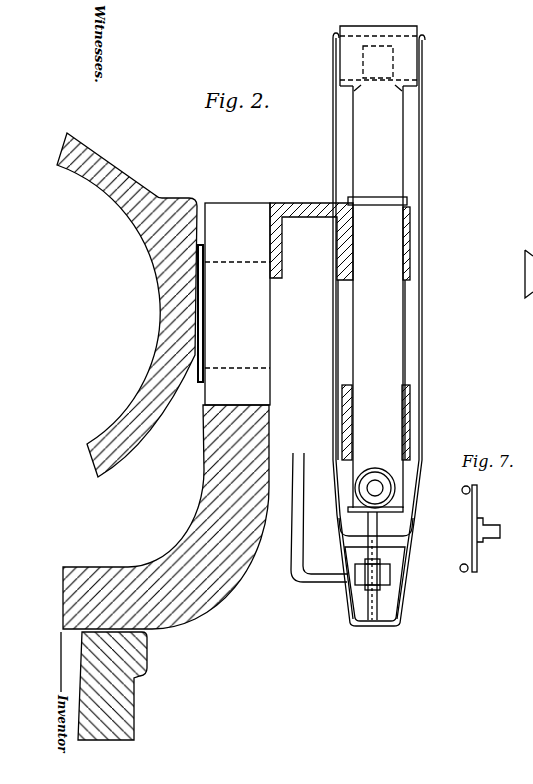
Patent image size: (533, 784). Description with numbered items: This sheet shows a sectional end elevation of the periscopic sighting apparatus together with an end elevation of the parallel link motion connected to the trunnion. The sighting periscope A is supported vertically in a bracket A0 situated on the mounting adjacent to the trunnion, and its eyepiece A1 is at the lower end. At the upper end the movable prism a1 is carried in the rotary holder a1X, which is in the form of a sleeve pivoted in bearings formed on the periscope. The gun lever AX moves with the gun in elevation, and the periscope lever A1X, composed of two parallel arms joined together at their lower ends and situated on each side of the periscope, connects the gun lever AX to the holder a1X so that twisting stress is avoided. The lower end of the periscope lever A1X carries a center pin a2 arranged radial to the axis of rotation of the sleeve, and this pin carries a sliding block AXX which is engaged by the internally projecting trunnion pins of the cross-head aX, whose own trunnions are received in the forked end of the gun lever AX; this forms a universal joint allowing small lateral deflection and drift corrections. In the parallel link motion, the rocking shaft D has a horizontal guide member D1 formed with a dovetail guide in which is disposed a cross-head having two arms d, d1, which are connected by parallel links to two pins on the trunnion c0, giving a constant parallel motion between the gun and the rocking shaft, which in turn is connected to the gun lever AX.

In FIG. 2, the sighting periscope A is at (377, 267).
In FIG. 2, the bracket A0 is at (350, 415).
In FIG. 2, the eyepiece A1 is at (377, 480).
In FIG. 2, the gun lever AX is at (310, 440).
In FIG. 2, the periscope lever A1X is at (340, 515).
In FIG. 2, the sliding block AXX is at (423, 550).
In FIG. 2, the prism a1 is at (378, 73).
In FIG. 2, the rotary holder a1X is at (402, 71).
In FIG. 2, the cross-head aX is at (367, 572).
In FIG. 2, the center pin a2 is at (373, 607).
In FIG. 2, the trunnion c0 is at (252, 321).
In FIG. 7, the arm d is at (472, 502).
In FIG. 7, the arm d1 is at (472, 552).
In FIG. 7, the rocking shaft D is at (491, 530).
In FIG. 7, the guide member D1 is at (478, 523).